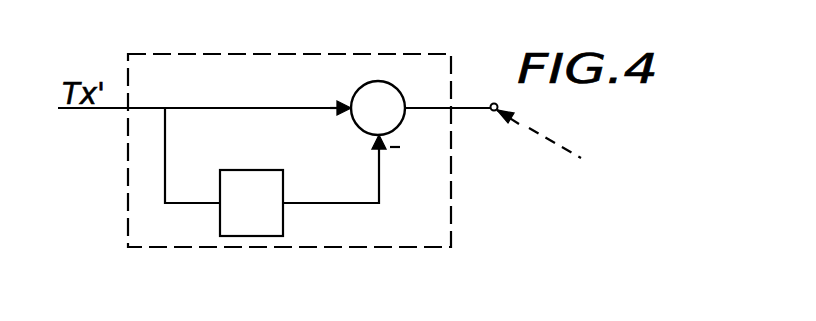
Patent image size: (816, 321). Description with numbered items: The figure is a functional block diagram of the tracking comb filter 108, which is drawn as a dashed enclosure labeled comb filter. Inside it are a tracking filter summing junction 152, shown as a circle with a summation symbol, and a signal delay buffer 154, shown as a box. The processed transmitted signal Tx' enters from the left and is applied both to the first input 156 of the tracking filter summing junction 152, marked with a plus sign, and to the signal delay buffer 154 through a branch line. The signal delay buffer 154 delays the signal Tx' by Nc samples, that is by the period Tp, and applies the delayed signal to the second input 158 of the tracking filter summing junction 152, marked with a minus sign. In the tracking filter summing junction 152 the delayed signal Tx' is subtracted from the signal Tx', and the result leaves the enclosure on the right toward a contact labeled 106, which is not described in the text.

The switch 106 is at (540, 131).
The tracking comb filter 108 is at (251, 51).
The tracking filter summing junction 152 is at (392, 65).
The signal delay buffer 154 is at (270, 216).
The first input 156 is at (349, 98).
The second input 158 is at (374, 142).